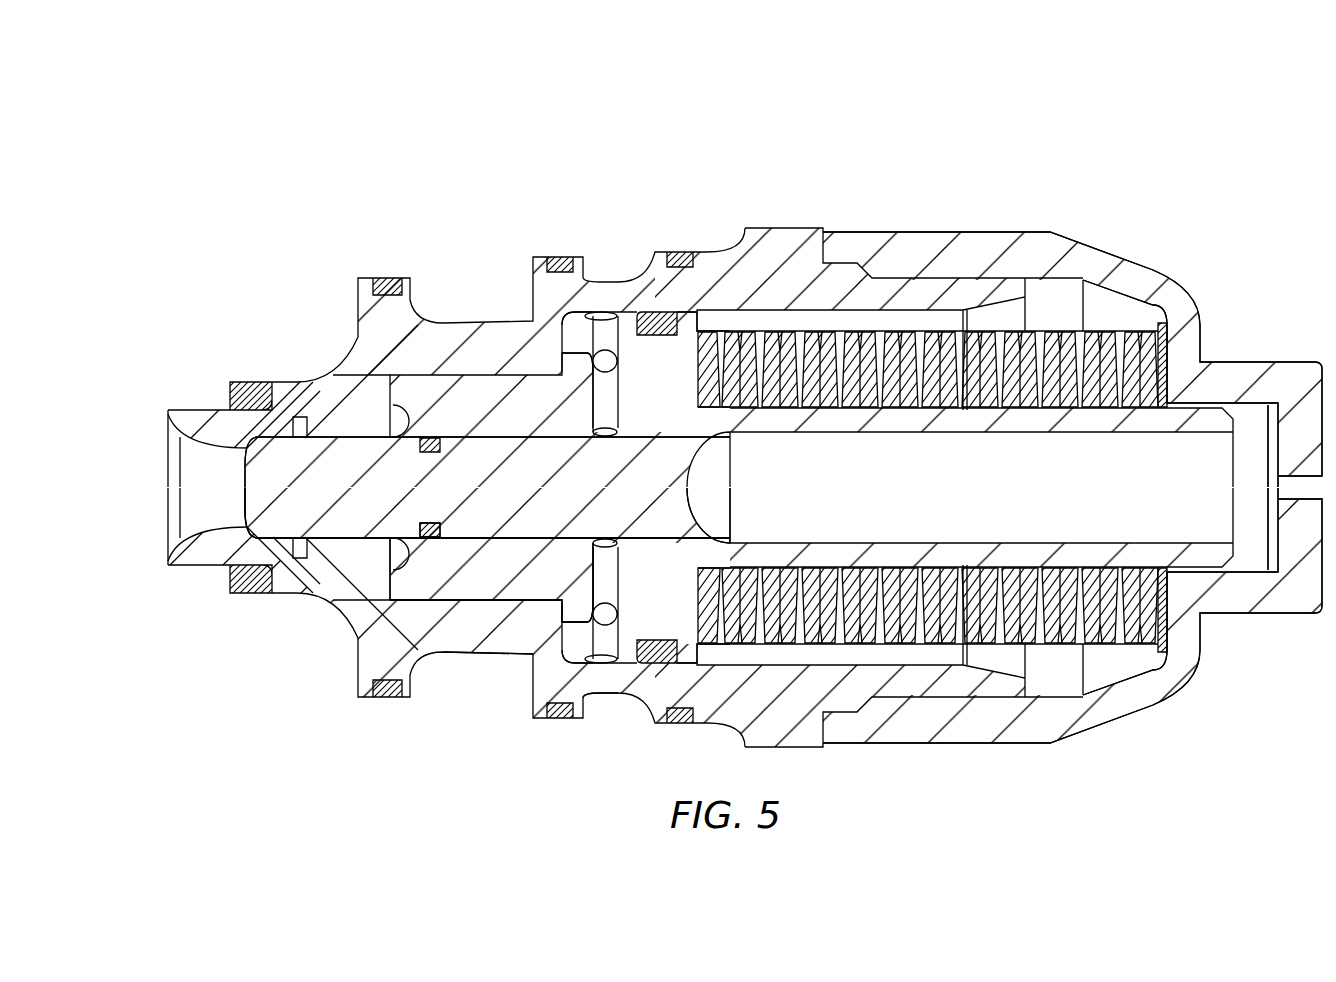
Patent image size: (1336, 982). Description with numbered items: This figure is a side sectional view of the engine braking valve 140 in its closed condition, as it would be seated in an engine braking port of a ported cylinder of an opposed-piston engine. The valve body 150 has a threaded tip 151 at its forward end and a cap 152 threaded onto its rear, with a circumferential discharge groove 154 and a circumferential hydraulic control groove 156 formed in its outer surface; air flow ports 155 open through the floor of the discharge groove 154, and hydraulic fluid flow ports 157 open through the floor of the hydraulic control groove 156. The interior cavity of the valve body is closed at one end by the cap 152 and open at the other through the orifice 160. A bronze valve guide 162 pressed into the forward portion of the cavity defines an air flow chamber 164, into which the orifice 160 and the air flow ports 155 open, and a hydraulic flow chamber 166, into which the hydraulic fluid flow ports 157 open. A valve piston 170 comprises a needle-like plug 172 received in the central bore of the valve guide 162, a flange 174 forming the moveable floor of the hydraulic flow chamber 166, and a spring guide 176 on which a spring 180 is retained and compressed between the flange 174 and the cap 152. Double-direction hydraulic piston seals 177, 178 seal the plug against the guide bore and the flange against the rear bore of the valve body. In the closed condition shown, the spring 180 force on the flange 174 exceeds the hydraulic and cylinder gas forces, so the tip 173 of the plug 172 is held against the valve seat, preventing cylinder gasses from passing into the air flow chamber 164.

The engine braking valve 140 is at (1043, 172).
The valve body 150 is at (710, 698).
The threaded tip 151 is at (203, 410).
The cap 152 is at (1128, 695).
The circumferential discharge groove 154 is at (466, 688).
The air flow ports 155 is at (440, 335).
The circumferential hydraulic control groove 156 is at (622, 710).
The hydraulic fluid flow ports 157 is at (603, 315).
The orifice 160 is at (188, 488).
The valve guide 162 is at (529, 393).
The air flow chamber 164 is at (358, 405).
The hydraulic flow chamber 166 is at (580, 335).
The valve piston 170 is at (523, 523).
The needle-like plug 172 is at (347, 512).
The tip 173 is at (253, 486).
The flange 174 is at (690, 310).
The spring guide 176 is at (1198, 420).
The double-direction hydraulic piston seal 177 is at (428, 522).
The double-direction hydraulic piston seal 178 is at (659, 327).
The spring 180 is at (1103, 333).